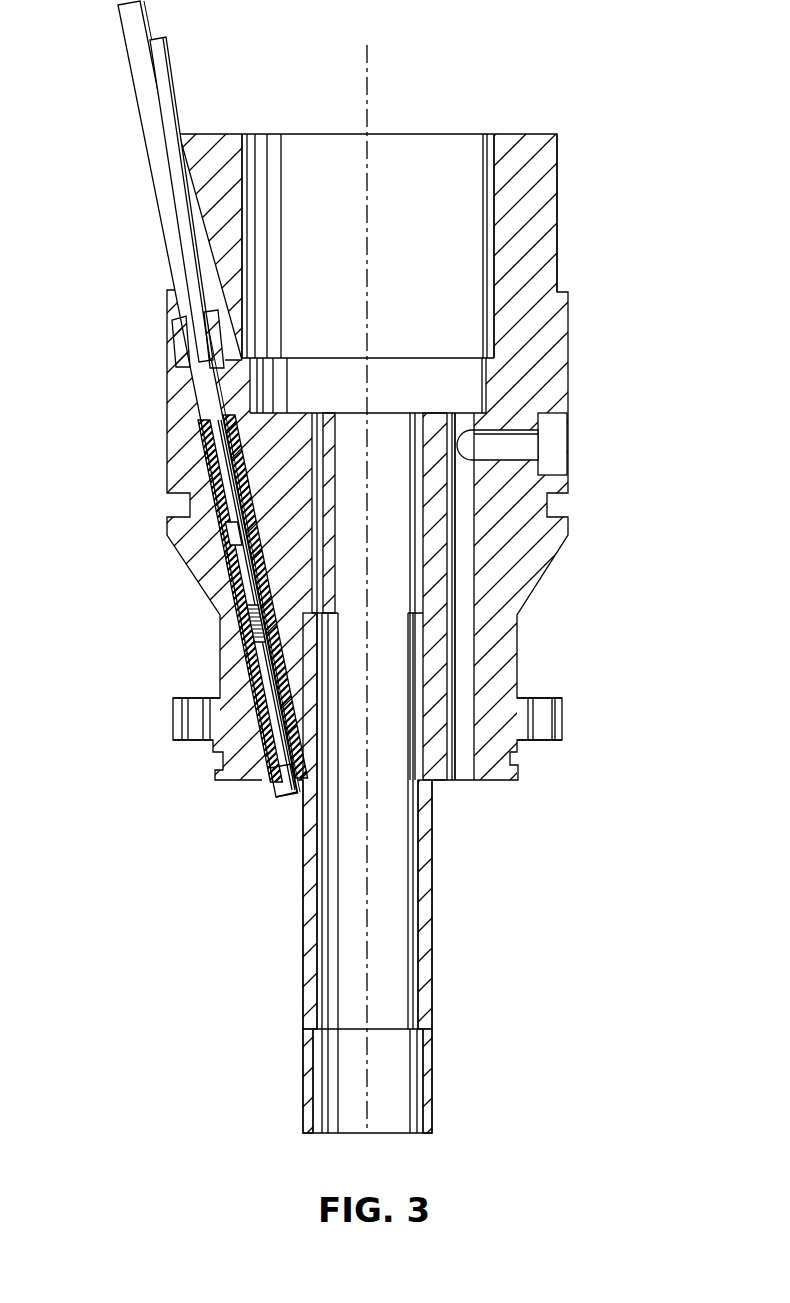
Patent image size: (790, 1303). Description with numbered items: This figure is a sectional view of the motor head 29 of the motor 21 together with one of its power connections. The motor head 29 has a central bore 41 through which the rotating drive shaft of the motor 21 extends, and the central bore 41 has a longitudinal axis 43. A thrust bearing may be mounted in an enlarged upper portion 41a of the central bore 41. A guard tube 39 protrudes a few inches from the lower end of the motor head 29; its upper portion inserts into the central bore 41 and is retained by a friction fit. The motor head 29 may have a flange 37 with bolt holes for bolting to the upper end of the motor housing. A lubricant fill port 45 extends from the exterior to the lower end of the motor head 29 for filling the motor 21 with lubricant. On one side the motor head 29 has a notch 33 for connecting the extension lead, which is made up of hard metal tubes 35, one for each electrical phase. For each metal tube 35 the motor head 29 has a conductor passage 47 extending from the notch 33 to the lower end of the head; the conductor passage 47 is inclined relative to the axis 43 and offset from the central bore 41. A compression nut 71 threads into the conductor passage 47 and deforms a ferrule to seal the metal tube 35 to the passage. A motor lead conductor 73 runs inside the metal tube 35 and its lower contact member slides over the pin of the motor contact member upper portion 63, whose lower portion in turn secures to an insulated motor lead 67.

The motor 21 is at (588, 122).
The motor head 29 is at (568, 325).
The notch 33 is at (170, 354).
The metal tube 35 is at (135, 62).
The flange 37 is at (173, 718).
The guard tube 39 is at (433, 943).
The central bore 41 is at (405, 561).
The enlarged upper portion 41a is at (482, 225).
The longitudinal axis 43 is at (367, 74).
The lubricant fill port 45 is at (461, 668).
The conductor passage 47 is at (211, 476).
The motor contact member upper portion 63 is at (237, 580).
The insulated motor lead 67 is at (280, 757).
The compression nut 71 is at (172, 343).
The motor lead conductor 73 is at (225, 525).